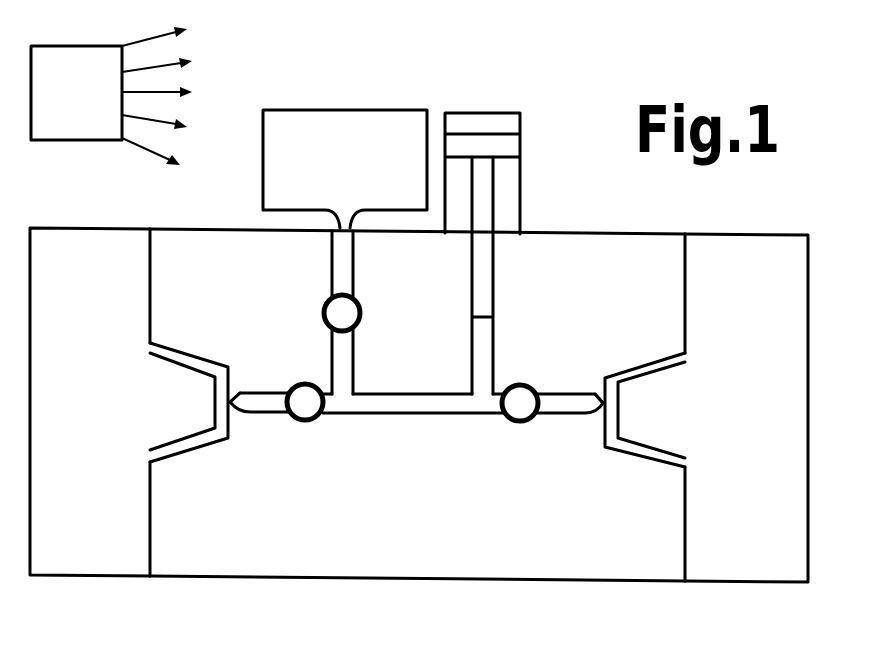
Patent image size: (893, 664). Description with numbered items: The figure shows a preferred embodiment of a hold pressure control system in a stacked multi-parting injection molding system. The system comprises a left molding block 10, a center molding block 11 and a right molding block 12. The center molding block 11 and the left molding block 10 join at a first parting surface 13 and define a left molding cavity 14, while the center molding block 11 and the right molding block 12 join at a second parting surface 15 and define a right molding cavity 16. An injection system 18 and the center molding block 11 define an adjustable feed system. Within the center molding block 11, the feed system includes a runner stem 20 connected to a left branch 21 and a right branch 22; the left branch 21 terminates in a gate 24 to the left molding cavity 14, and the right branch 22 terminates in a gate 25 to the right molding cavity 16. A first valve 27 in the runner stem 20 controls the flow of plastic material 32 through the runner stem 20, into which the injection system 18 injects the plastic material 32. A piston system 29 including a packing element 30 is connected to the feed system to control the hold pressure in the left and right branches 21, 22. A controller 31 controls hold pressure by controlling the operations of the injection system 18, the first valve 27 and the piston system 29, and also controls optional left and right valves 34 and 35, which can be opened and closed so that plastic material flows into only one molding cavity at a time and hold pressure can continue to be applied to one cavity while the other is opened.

The left molding block 10 is at (97, 578).
The center molding block 11 is at (408, 582).
The right molding block 12 is at (735, 587).
The first parting surface 13 is at (150, 291).
The left molding cavity 14 is at (187, 350).
The second parting surface 15 is at (685, 290).
The right molding cavity 16 is at (657, 353).
The injection system 18 is at (322, 122).
The runner stem 20 is at (353, 272).
The left branch 21 is at (273, 413).
The right branch 22 is at (578, 417).
The gate 24 is at (233, 393).
The gate 25 is at (602, 402).
The first valve 27 is at (362, 310).
The piston system 29 is at (522, 147).
The packing element 30 is at (480, 283).
The controller 31 is at (52, 65).
The plastic material 32 is at (392, 403).
The left valve 34 is at (318, 417).
The right valve 35 is at (528, 422).